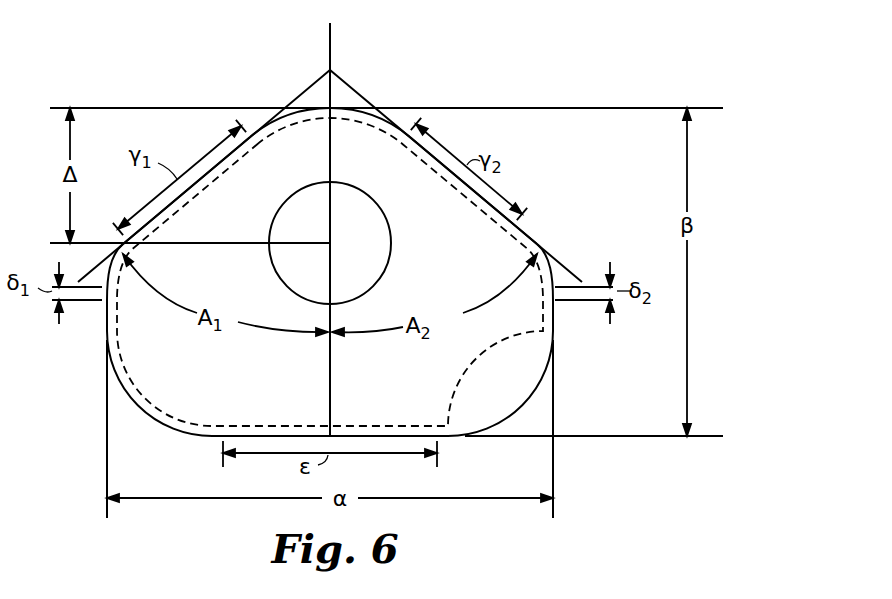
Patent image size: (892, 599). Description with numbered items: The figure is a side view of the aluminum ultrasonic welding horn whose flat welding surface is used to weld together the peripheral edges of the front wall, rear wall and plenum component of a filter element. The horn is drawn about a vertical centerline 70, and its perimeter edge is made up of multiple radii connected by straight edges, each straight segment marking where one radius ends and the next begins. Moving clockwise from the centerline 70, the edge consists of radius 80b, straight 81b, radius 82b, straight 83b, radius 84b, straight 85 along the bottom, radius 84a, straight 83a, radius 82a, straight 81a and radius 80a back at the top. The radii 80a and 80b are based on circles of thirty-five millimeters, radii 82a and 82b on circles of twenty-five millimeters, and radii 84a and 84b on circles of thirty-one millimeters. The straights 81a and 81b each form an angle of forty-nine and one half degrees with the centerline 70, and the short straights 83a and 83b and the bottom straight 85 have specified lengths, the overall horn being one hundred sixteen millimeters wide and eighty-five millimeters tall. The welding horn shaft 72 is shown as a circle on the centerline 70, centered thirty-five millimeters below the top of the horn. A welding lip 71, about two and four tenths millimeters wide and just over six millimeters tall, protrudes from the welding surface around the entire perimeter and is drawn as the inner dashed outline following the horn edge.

The centerline 70 is at (328, 43).
The welding lip 71 is at (190, 424).
The welding horn shaft 72 is at (378, 205).
The radius 80a is at (288, 116).
The radius 80b is at (368, 114).
The straight 81a is at (196, 183).
The straight 81b is at (458, 191).
The radius 82a is at (112, 268).
The radius 82b is at (548, 268).
The straight 83a is at (107, 318).
The straight 83b is at (553, 318).
The radius 84a is at (146, 412).
The radius 84b is at (512, 405).
The straight 85 is at (281, 436).